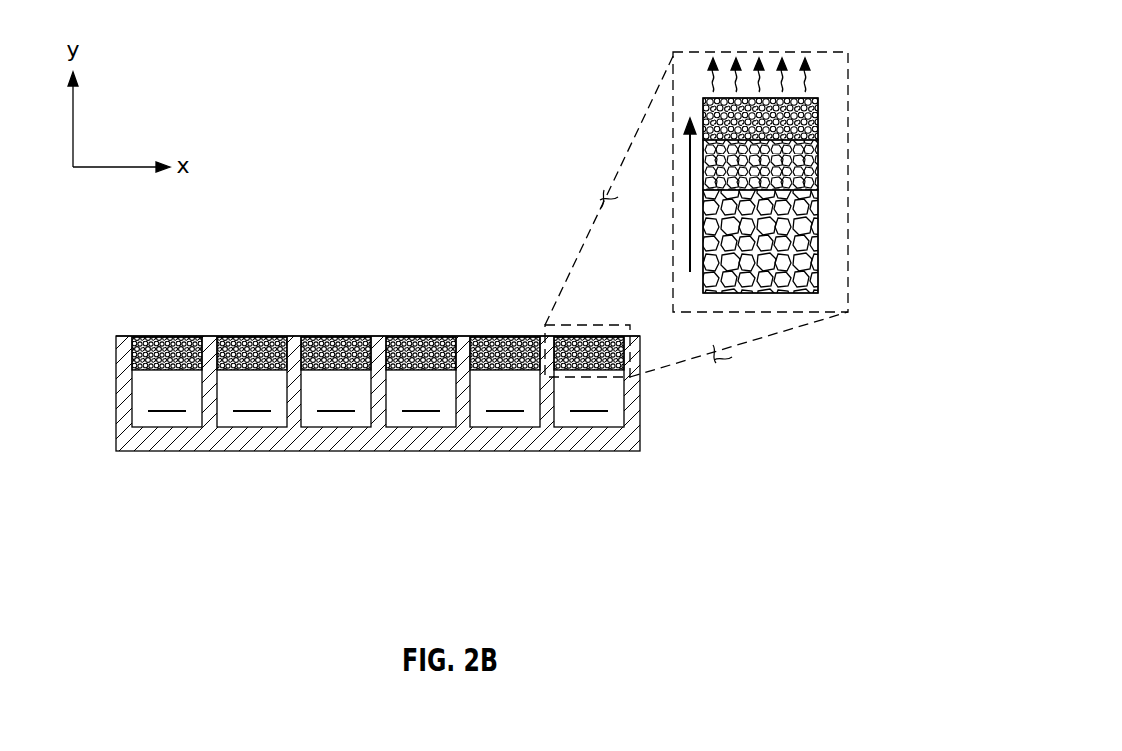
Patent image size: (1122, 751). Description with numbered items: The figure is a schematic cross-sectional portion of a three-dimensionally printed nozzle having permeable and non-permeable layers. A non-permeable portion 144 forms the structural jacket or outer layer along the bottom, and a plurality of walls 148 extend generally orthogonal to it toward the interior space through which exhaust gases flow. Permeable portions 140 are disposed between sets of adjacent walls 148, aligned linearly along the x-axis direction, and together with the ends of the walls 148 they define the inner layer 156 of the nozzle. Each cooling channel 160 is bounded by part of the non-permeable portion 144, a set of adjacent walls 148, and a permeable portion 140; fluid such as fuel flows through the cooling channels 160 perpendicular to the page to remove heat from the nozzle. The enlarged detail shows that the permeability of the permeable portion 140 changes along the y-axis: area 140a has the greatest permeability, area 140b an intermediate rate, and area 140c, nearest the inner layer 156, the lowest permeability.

The permeable portion 140 is at (532, 194).
The area of the permeable portion 140a is at (806, 247).
The area of the permeable portion 140b is at (812, 164).
The area of the permeable portion 140c is at (826, 106).
The non-permeable portion 144 is at (328, 443).
The walls 148 is at (356, 425).
The inner layer 156 is at (294, 302).
The cooling channels 160 is at (378, 382).